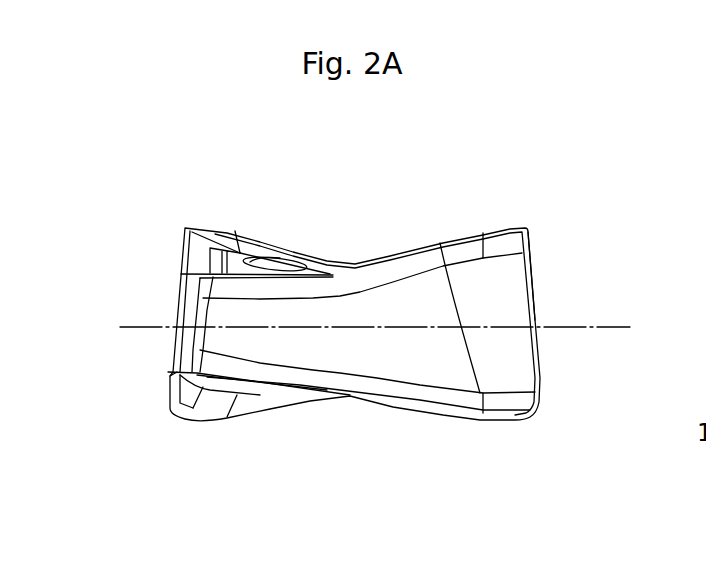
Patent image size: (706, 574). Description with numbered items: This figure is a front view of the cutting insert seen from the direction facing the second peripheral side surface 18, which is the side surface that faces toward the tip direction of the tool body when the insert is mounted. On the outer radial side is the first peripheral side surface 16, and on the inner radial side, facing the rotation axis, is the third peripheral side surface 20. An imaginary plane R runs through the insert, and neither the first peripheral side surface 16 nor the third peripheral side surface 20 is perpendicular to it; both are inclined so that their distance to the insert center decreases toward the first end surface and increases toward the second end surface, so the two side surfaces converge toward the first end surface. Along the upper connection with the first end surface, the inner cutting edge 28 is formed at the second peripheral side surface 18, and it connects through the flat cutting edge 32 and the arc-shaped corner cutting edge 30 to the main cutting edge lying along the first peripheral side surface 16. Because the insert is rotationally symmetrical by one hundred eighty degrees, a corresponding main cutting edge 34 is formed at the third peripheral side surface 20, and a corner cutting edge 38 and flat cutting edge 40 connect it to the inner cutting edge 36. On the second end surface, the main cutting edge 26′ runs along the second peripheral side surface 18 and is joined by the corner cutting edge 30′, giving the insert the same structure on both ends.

The first peripheral side surface 16 is at (578, 302).
The second peripheral side surface 18 is at (398, 350).
The third peripheral side surface 20 is at (169, 357).
The main cutting edge 26′ is at (442, 417).
The inner cutting edge 28 is at (397, 240).
The corner cutting edge 30 is at (520, 227).
The corner cutting edge 30′ is at (517, 422).
The flat cutting edge 32 is at (473, 232).
The main cutting edge 34 is at (181, 249).
The inner cutting edge 36 is at (318, 248).
The corner cutting edge 38 is at (186, 226).
The flat cutting edge 40 is at (237, 236).
The imaginary plane R is at (607, 328).